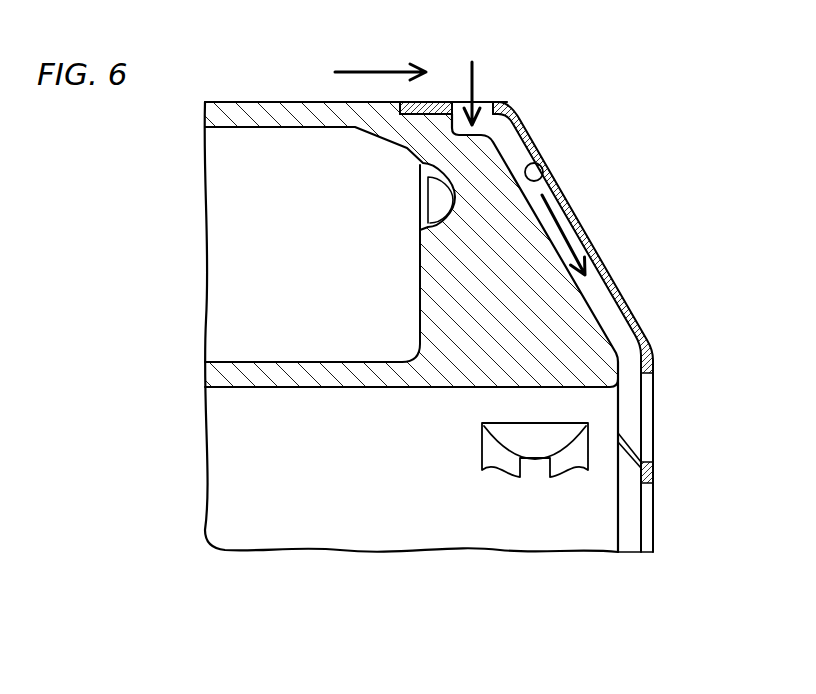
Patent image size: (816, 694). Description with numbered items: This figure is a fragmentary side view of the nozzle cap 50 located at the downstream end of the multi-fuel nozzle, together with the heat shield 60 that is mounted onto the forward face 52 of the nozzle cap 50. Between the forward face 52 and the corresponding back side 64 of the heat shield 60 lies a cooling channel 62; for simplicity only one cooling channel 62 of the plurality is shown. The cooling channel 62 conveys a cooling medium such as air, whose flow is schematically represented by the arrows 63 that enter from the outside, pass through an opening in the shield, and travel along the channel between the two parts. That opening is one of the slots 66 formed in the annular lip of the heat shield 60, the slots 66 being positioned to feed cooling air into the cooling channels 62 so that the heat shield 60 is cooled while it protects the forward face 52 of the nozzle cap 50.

The nozzle cap 50 is at (392, 473).
The forward face of nozzle cap 52 is at (590, 300).
The heat shield 60 is at (600, 251).
The cooling channel 62 is at (508, 142).
The arrows 63 is at (365, 72).
The back side of heat shield 64 is at (543, 176).
The slot 66 is at (490, 103).